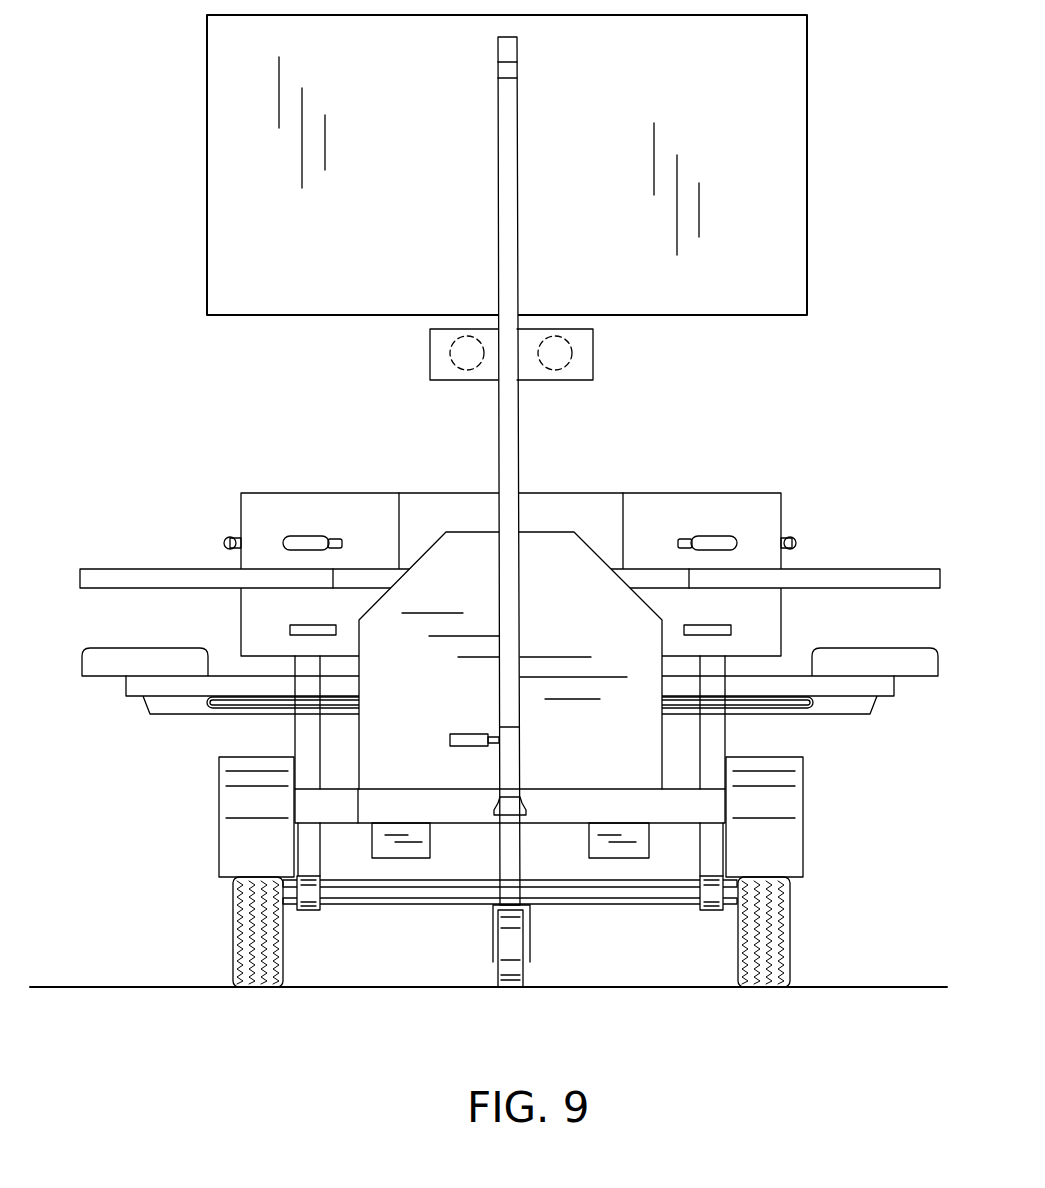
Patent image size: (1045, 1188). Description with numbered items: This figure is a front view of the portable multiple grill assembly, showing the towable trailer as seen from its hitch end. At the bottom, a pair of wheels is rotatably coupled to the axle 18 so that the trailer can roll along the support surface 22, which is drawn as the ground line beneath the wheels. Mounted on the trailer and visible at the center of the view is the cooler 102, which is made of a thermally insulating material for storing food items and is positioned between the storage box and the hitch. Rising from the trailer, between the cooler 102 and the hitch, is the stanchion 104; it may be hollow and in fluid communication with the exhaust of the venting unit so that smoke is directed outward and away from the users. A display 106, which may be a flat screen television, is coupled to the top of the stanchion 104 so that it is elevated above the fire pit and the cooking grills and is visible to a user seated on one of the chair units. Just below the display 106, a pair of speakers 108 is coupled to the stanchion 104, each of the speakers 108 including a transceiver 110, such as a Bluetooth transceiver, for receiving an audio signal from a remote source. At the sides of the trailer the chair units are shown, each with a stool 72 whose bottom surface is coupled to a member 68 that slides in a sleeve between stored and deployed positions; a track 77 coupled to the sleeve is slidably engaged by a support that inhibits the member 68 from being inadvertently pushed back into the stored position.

The axle 18 is at (438, 903).
The support surface 22 is at (153, 986).
The member 68 is at (170, 717).
The stool 72 is at (82, 665).
The track 77 is at (233, 708).
The cooler 102 is at (598, 535).
The stanchion 104 is at (499, 444).
The display 106 is at (206, 153).
The speakers 108 is at (430, 343).
The transceiver 110 is at (455, 372).